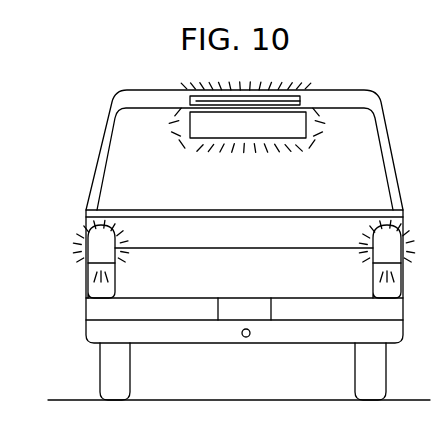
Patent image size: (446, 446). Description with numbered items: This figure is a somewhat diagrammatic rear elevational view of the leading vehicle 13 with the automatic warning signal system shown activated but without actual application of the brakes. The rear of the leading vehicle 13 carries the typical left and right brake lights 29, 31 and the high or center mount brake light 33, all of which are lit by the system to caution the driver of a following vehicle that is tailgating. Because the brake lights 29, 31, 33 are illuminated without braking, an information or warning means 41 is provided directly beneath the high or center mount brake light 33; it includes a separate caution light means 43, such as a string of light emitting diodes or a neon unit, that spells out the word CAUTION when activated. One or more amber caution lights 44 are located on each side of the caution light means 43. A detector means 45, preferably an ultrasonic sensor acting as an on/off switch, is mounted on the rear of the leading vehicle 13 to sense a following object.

The leading vehicle 13 is at (335, 98).
The left brake light 29 is at (98, 248).
The right brake light 31 is at (393, 248).
The high and/or center mount brake light 33 is at (206, 100).
The information or warning means 41 is at (215, 138).
The caution light means 43 is at (191, 137).
The caution lights 44 is at (187, 112).
The detector means 45 is at (246, 338).